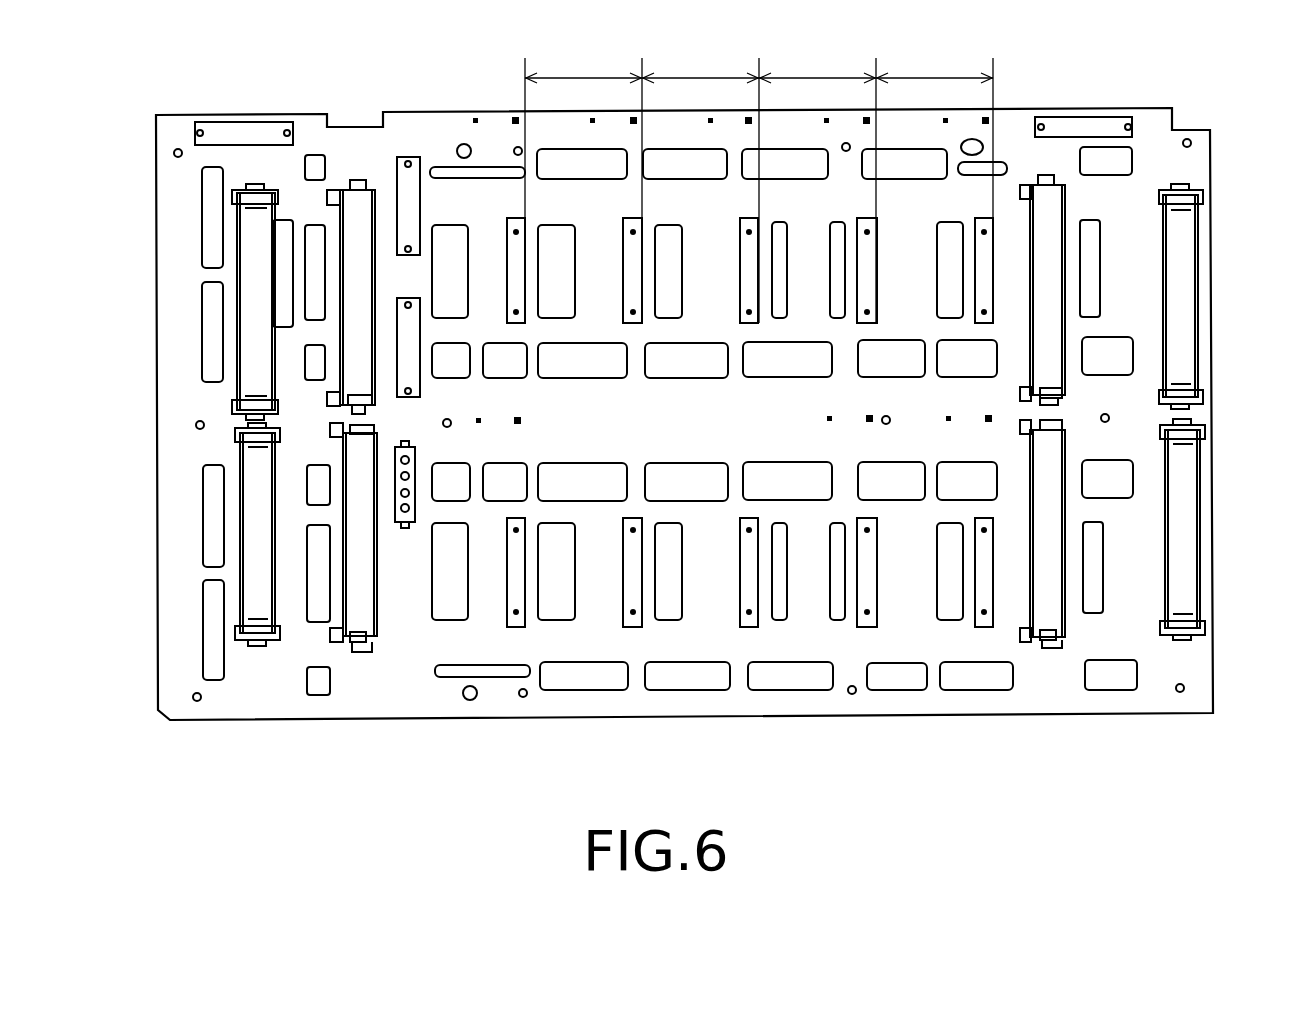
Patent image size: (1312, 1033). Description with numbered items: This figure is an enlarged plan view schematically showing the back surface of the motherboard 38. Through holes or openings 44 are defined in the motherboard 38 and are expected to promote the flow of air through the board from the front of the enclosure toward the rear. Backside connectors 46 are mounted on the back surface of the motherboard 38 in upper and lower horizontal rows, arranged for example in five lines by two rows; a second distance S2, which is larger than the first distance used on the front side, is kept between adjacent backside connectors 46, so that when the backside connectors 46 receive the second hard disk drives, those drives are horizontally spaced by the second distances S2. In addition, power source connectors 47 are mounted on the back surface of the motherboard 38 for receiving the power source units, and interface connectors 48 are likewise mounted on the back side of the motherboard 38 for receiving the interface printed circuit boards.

The motherboard 38 is at (1213, 434).
The openings 44 is at (600, 465).
The backside connectors 46 is at (510, 221).
The power source connectors 47 is at (243, 340).
The interface connectors 48 is at (372, 189).
The second distance S2 is at (759, 176).